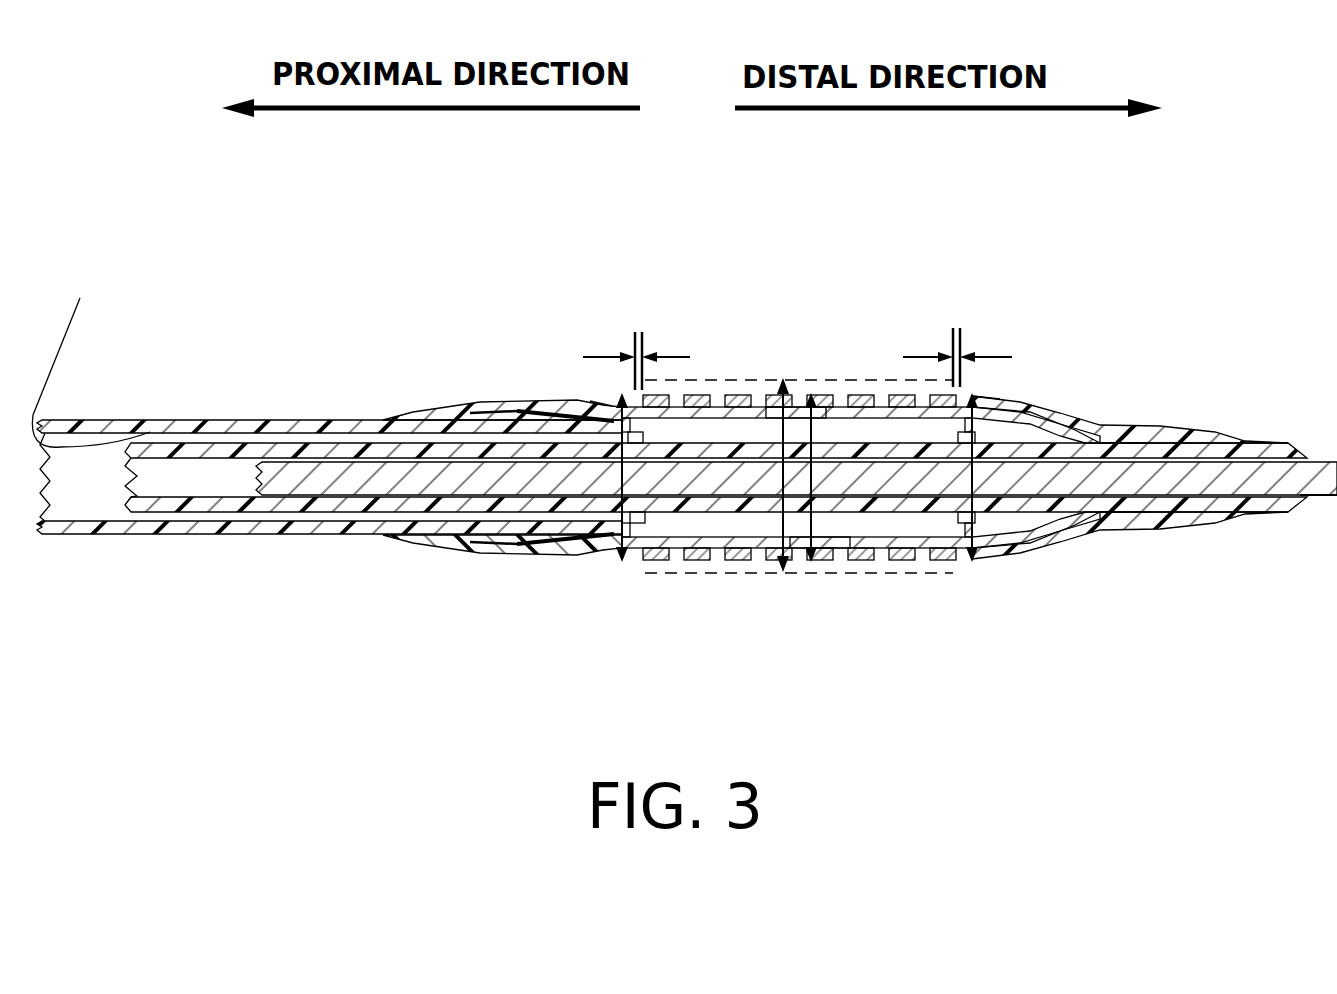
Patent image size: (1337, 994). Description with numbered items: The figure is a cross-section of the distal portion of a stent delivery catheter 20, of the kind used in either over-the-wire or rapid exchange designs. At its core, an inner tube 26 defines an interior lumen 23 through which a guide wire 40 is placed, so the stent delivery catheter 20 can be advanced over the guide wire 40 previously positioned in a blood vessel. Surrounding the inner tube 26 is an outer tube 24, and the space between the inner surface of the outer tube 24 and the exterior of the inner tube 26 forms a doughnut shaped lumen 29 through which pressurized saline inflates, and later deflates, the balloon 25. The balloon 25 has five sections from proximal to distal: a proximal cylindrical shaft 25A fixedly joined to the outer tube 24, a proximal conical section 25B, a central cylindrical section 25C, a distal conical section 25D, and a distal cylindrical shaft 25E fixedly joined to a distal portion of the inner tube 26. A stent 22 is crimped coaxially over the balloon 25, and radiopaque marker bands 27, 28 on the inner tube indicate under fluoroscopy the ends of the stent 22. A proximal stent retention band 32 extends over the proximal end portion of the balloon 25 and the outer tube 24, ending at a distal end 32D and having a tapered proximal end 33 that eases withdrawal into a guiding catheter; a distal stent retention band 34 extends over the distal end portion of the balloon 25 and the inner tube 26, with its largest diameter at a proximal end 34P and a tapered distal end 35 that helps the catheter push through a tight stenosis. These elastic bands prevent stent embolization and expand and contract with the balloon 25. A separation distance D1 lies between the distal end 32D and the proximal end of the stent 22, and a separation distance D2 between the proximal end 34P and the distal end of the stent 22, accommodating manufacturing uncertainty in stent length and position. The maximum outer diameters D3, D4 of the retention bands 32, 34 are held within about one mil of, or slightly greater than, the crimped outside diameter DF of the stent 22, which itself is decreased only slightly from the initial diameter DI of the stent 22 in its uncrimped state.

The stent delivery catheter 20 is at (424, 268).
The stent 22 is at (820, 540).
The interior lumen 23 is at (192, 488).
The outer tube 24 is at (203, 420).
The balloon 25 is at (808, 365).
The proximal cylindrical shaft 25A is at (510, 408).
The proximal conical section 25B is at (587, 407).
The central cylindrical section 25C is at (797, 410).
The distal conical section 25D is at (1030, 420).
The distal cylindrical shaft 25E is at (1130, 425).
The inner tube 26 is at (1255, 443).
The radiopaque marker band 27 is at (960, 520).
The radiopaque marker band 28 is at (650, 520).
The doughnut shaped lumen 29 is at (91, 353).
The proximal stent retention band 32 is at (477, 407).
The distal end of proximal stent retention band 32D is at (597, 390).
The tapered proximal end 33 is at (402, 538).
The distal stent retention band 34 is at (1193, 432).
The proximal end of distal stent retention band 34P is at (995, 388).
The tapered distal end 35 is at (1230, 515).
The guide wire 40 is at (1333, 498).
The separation distance D1 is at (768, 361).
The separation distance D2 is at (828, 450).
The maximum outer diameter of proximal stent retention band D3 is at (622, 562).
The maximum outer diameter of distal stent retention band D4 is at (972, 562).
The initial diameter DI is at (783, 572).
The outside diameter DF is at (811, 562).